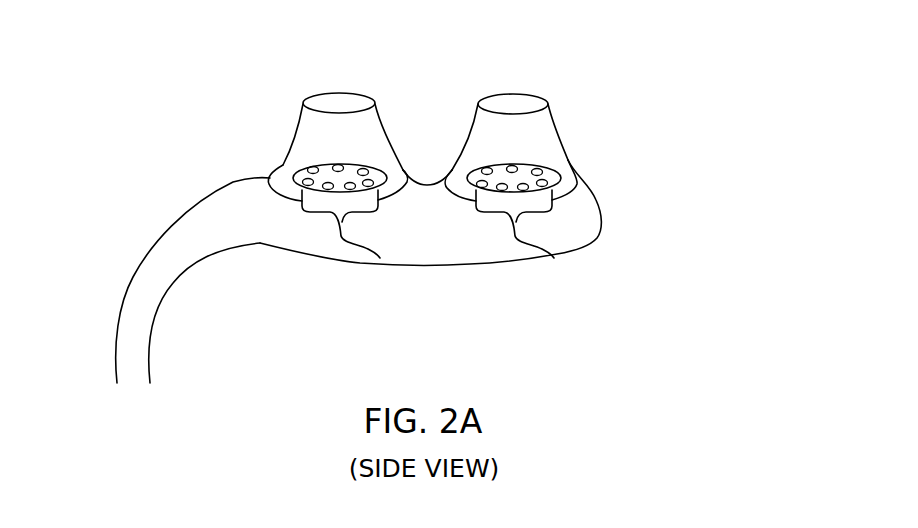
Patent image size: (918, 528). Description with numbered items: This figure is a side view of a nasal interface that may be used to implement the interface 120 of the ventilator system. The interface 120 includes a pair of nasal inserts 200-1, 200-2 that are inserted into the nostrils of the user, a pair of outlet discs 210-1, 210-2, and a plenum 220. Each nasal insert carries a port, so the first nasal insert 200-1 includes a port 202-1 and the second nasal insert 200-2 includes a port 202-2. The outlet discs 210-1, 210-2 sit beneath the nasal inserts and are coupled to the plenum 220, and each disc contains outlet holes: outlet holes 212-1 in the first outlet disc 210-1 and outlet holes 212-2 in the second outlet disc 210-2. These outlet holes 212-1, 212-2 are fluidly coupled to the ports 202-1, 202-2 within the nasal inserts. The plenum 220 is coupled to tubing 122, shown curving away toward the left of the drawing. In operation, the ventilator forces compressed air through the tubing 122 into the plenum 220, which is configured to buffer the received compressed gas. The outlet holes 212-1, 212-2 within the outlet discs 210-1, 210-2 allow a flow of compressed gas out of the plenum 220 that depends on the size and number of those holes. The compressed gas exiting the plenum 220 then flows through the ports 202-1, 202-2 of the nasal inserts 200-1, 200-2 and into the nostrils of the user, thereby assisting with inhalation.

The interface 120 is at (714, 112).
The tubing 122 is at (138, 262).
The plenum 220 is at (320, 262).
The nasal insert 200-1 is at (293, 114).
The port 202-1 is at (355, 104).
The outlet disc 210-1 is at (282, 165).
The outlet hole 212-1 is at (380, 258).
The nasal insert 200-2 is at (490, 96).
The port 202-2 is at (531, 103).
The outlet disc 210-2 is at (560, 165).
The outlet hole 212-2 is at (554, 258).